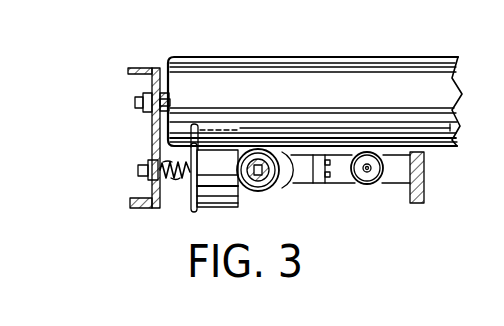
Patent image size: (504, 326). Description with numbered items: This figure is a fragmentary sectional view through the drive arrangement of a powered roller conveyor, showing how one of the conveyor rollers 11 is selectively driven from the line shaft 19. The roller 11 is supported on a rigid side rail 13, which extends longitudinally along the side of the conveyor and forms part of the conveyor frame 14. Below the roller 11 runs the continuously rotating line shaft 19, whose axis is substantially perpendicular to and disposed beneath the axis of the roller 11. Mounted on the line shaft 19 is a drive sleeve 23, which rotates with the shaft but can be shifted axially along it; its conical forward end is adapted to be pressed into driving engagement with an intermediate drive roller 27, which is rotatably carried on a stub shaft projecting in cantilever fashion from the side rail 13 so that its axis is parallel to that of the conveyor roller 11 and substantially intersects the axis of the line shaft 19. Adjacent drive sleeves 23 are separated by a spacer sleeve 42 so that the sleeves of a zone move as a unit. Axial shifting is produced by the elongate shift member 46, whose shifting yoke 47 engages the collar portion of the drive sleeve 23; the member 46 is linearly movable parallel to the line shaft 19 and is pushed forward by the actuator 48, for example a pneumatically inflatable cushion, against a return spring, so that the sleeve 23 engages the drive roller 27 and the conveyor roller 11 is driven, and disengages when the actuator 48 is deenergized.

The cylindrical roller 11 is at (339, 73).
The side rail 13 is at (152, 140).
The conveyor frame 14 is at (424, 178).
The line shaft 19 is at (265, 178).
The drive sleeve 23 is at (248, 192).
The intermediate drive roller 27 is at (217, 188).
The spacer sleeve 42 is at (253, 150).
The shift member 46 is at (337, 170).
The shifting yoke 47 is at (300, 152).
The actuator 48 is at (380, 187).